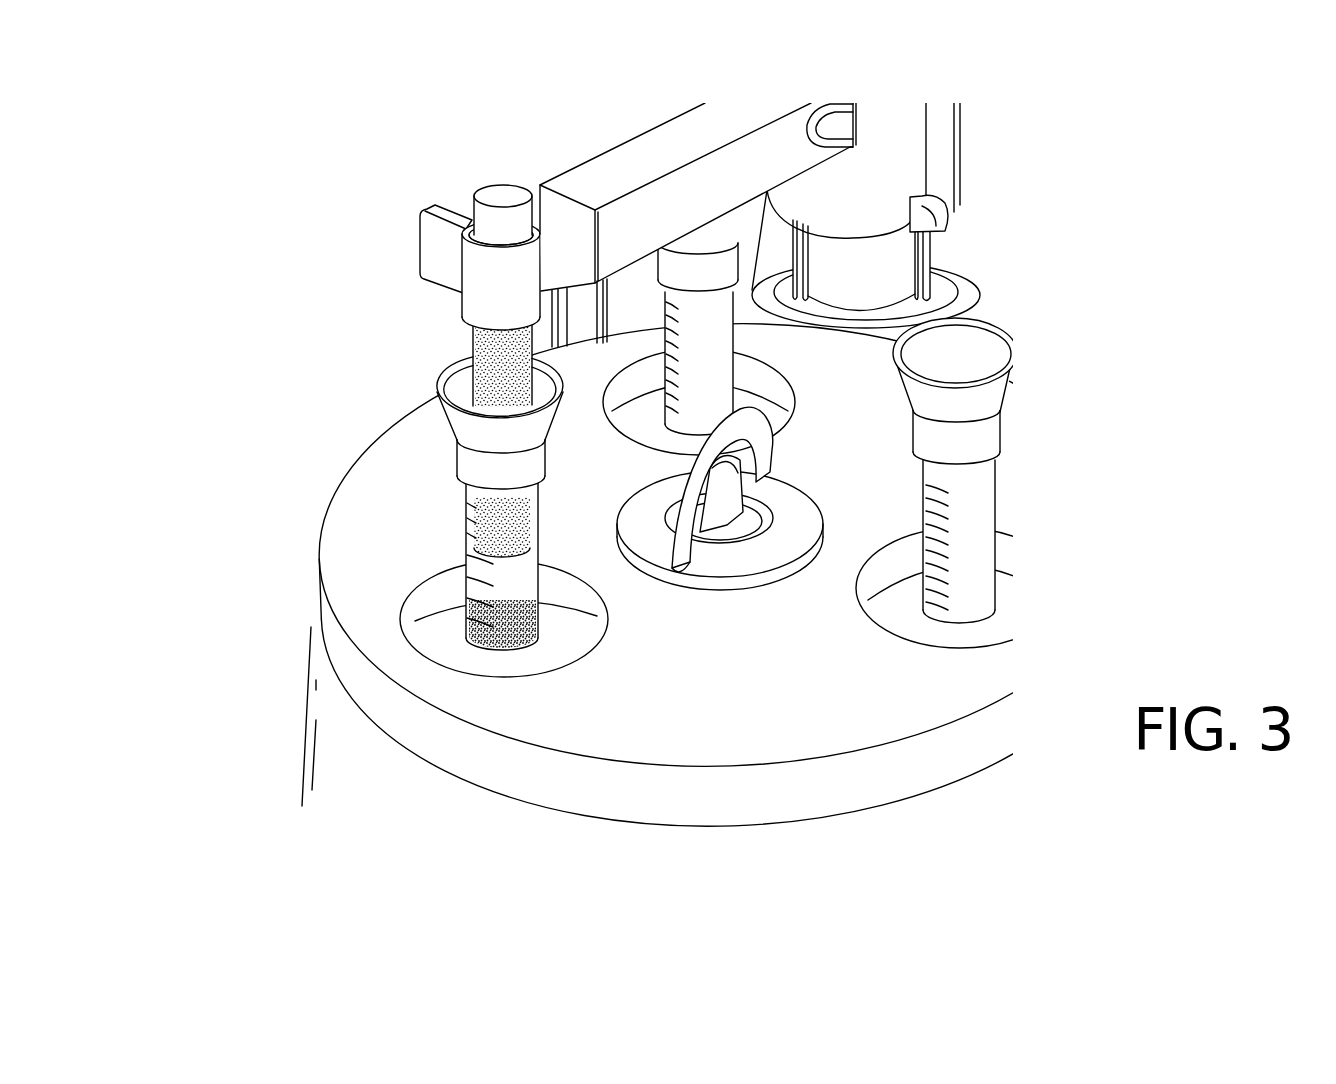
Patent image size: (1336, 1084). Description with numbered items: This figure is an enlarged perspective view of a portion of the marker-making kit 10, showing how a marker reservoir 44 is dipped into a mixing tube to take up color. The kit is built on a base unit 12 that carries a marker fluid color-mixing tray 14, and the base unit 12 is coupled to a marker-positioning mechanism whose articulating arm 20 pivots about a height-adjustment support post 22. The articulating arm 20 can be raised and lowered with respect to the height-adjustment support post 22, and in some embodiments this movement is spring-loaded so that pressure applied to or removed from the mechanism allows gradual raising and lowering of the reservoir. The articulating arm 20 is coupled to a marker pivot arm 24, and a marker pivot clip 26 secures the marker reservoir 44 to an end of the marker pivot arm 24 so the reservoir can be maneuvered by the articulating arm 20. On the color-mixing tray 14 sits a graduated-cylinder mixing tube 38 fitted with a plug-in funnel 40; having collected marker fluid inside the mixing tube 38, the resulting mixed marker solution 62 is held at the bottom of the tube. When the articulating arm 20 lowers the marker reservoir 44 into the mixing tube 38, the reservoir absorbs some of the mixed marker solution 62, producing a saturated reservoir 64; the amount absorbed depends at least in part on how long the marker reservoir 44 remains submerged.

The marker-making kit 10 is at (292, 110).
The base unit 12 is at (328, 700).
The marker fluid color-mixing tray 14 is at (348, 488).
The articulating arm 20 is at (912, 141).
The height-adjustment support post 22 is at (906, 241).
The marker pivot arm 24 is at (642, 143).
The marker pivot clip 26 is at (483, 280).
The graduated-cylinder mixing tube 38 is at (537, 513).
The plug-in funnel 40 is at (542, 413).
The marker reservoir 44 is at (498, 184).
The mixed marker solution 62 is at (530, 640).
The saturated reservoir 64 is at (483, 335).